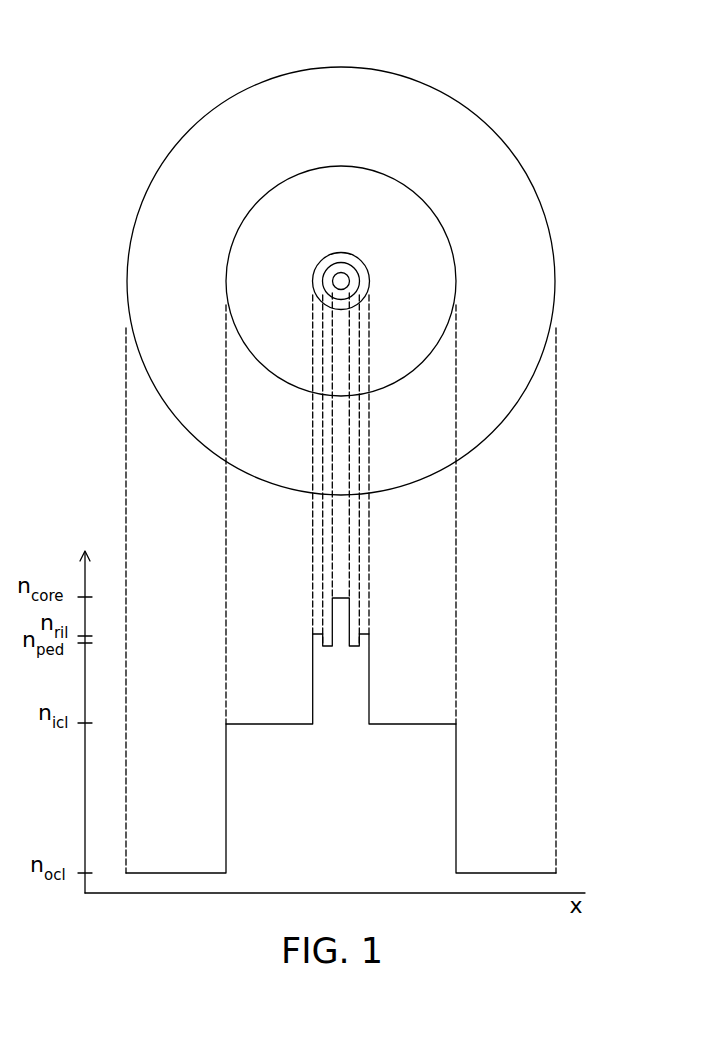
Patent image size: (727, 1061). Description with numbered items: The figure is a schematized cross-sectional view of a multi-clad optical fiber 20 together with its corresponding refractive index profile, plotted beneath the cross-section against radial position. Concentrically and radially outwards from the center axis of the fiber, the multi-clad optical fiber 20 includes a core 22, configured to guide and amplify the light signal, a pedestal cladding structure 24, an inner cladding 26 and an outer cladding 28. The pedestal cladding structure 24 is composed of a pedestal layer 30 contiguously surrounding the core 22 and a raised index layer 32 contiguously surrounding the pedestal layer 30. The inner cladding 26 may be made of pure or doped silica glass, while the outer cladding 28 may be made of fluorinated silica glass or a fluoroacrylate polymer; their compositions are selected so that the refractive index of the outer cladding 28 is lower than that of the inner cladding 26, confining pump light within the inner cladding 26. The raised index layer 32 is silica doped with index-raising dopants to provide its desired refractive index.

The multi-clad optical fiber 20 is at (538, 160).
The core 22 is at (341, 275).
The pedestal cladding structure 24 is at (320, 259).
The inner cladding 26 is at (253, 258).
The outer cladding 28 is at (522, 272).
The pedestal layer 30 is at (353, 275).
The raised index layer 32 is at (353, 262).